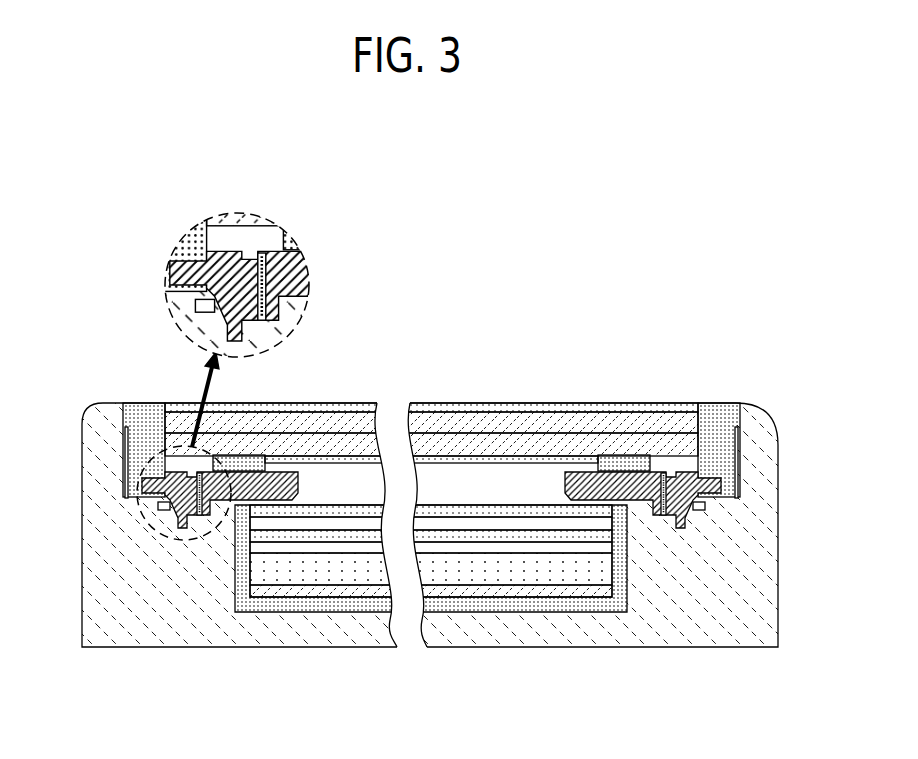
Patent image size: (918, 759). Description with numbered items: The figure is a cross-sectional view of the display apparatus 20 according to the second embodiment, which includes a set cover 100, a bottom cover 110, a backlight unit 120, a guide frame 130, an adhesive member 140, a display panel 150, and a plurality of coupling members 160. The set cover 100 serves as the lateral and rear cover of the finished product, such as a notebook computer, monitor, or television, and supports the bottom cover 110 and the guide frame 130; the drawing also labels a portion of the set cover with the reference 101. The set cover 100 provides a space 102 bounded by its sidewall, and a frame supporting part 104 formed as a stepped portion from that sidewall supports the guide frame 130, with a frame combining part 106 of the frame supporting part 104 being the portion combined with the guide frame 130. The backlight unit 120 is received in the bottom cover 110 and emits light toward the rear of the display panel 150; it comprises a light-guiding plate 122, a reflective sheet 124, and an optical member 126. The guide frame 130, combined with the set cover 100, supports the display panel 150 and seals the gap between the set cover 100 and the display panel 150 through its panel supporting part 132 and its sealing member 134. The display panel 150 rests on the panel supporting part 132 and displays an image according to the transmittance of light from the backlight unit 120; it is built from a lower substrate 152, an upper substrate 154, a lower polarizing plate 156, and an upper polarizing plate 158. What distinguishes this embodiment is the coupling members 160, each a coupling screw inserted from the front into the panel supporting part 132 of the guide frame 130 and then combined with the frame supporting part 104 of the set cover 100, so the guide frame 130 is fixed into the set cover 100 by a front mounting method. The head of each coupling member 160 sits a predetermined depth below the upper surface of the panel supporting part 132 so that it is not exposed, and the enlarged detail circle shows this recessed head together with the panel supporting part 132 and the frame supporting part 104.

The display apparatus 20 is at (78, 350).
The set cover 100 is at (230, 696).
The front housing portion 101 is at (105, 458).
The space 102 is at (232, 612).
The frame supporting part 104 is at (160, 503).
The frame combining part 106 is at (195, 547).
The bottom cover 110 is at (618, 608).
The backlight unit 120 is at (553, 687).
The light-guiding plate 122 is at (510, 572).
The reflective sheet 124 is at (552, 592).
The optical member 126 is at (487, 550).
The guide frame 130 is at (698, 343).
The panel supporting part 132 is at (642, 485).
The sealing member 134 is at (709, 412).
The adhesive member 140 is at (606, 465).
The display panel 150 is at (538, 343).
The lower substrate 152 is at (500, 445).
The upper substrate 154 is at (460, 420).
The lower polarizing plate 156 is at (541, 460).
The upper polarizing plate 158 is at (424, 408).
The coupling member 160 is at (262, 258).